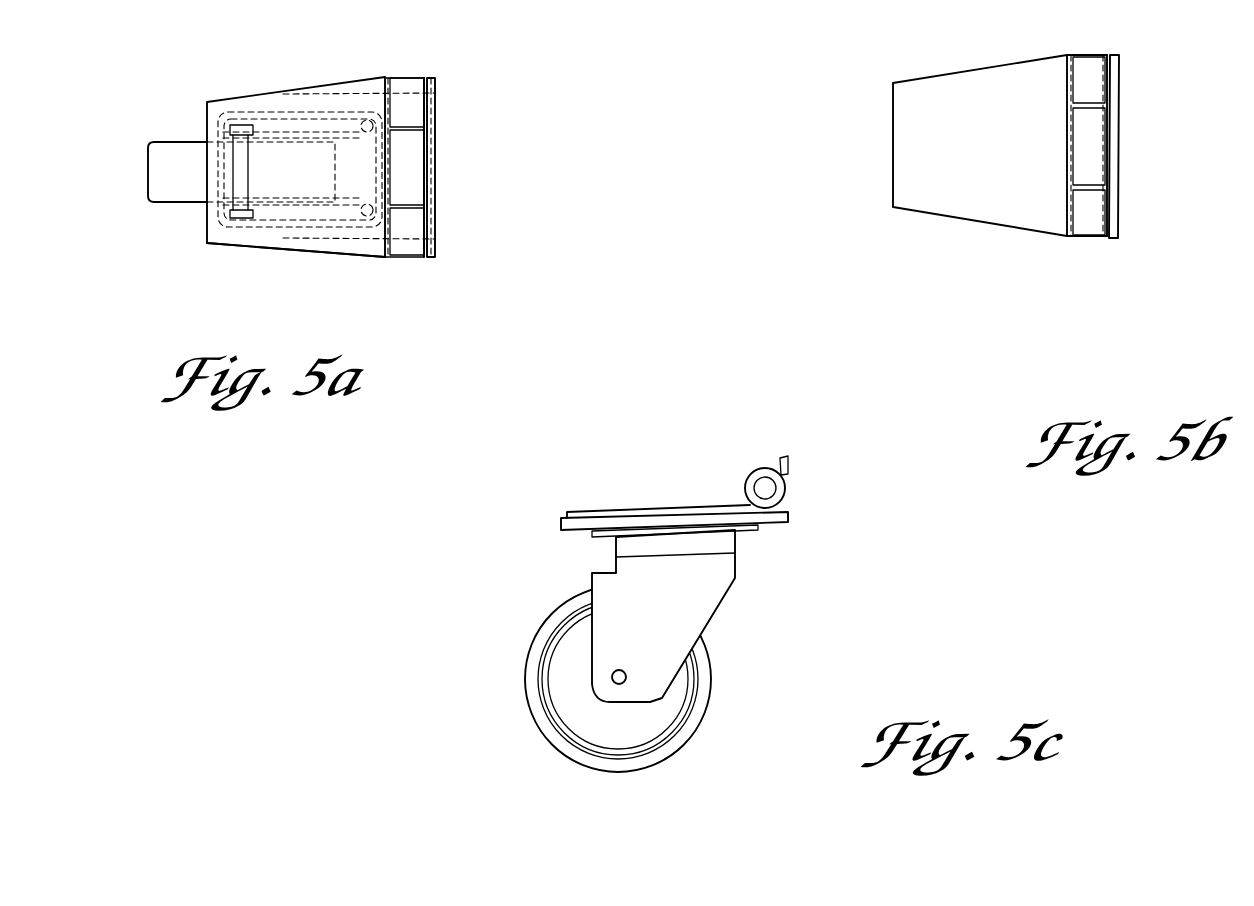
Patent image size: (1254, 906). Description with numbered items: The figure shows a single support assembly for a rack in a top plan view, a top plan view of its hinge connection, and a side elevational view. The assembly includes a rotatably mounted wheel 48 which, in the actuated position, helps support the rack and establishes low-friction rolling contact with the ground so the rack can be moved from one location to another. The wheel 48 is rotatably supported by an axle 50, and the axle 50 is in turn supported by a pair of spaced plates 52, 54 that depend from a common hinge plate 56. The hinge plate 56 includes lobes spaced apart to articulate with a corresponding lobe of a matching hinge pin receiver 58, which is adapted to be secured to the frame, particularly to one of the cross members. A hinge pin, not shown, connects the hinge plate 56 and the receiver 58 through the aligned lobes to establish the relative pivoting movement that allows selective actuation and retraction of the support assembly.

In FIG. 5A, the wheel 48 is at (160, 198).
In FIG. 5C, the wheel 48 is at (552, 737).
In FIG. 5A, the axle 50 is at (232, 182).
In FIG. 5C, the axle 50 is at (612, 675).
In FIG. 5A, the plate 52 is at (281, 137).
In FIG. 5A, the plate 54 is at (297, 205).
In FIG. 5C, the plate 54 is at (707, 598).
In FIG. 5A, the hinge plate 56 is at (360, 87).
In FIG. 5B, the hinge plate 56 is at (1007, 164).
In FIG. 5C, the hinge plate 56 is at (665, 522).
In FIG. 5A, the hinge pin receiver 58 is at (412, 175).
In FIG. 5B, the hinge pin receiver 58 is at (1114, 150).